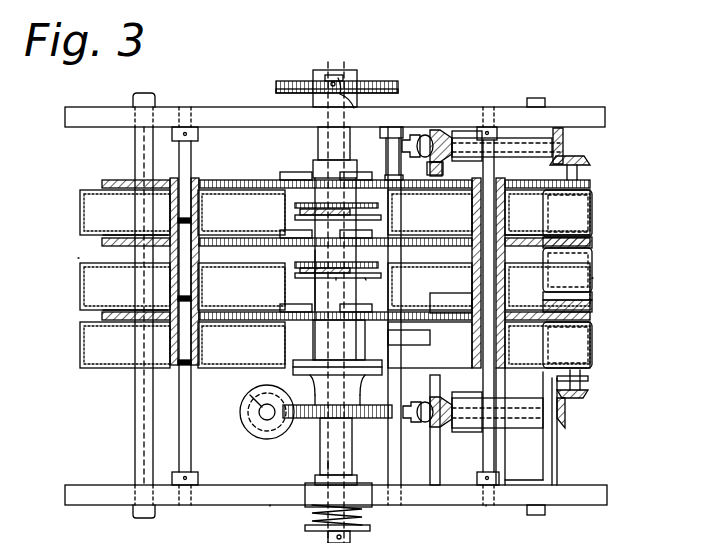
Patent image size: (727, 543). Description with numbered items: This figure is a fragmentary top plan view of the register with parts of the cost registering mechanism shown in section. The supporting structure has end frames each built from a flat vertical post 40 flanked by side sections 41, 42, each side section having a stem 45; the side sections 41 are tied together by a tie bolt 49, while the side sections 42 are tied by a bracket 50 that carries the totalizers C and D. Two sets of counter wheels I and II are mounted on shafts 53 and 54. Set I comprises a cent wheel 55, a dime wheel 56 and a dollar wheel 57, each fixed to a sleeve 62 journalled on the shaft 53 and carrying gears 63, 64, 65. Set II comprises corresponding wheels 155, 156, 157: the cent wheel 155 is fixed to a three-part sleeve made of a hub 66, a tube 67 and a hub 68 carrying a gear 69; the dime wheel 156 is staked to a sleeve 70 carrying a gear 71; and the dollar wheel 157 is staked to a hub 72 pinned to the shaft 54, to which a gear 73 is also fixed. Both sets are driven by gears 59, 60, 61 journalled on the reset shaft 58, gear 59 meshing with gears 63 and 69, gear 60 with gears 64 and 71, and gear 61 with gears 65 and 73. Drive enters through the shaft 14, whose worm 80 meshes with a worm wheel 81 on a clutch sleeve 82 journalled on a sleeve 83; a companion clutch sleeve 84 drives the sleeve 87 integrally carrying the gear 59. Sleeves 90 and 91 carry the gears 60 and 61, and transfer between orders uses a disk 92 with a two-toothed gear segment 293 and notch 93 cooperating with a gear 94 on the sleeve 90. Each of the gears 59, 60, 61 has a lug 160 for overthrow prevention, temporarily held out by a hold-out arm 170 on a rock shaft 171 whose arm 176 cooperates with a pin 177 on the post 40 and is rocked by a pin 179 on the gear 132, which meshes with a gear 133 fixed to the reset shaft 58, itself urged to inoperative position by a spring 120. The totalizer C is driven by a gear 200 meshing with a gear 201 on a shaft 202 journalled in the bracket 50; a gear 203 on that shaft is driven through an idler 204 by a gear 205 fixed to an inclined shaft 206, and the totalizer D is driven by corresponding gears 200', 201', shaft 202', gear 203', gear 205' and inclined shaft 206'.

The shaft 14 is at (260, 402).
The flat vertical post 40 is at (374, 500).
The side section 41 is at (270, 506).
The side section 42 is at (486, 507).
The stem 45 is at (588, 487).
The tie bolt 49 is at (134, 420).
The bracket 50 is at (558, 447).
The shaft 53 is at (183, 418).
The shaft 54 is at (499, 445).
The cent wheel 55 is at (79, 345).
The dime wheel 56 is at (79, 292).
The dollar wheel 57 is at (79, 214).
The reset shaft 58 is at (328, 466).
The gear 59 is at (241, 286).
The gear 60 is at (241, 212).
The gear 61 is at (264, 179).
The sleeve 62 is at (199, 212).
The gear 63 is at (108, 311).
The gear 64 is at (108, 236).
The gear 65 is at (110, 180).
The hub 66 is at (547, 212).
The tube 67 is at (507, 238).
The hub 68 is at (471, 305).
The gear 69 is at (547, 345).
The sleeve 70 is at (547, 282).
The gear 71 is at (430, 282).
The hub 72 is at (430, 345).
The gear 73 is at (430, 212).
The worm 80 is at (258, 430).
The worm wheel 81 is at (298, 418).
The clutch sleeve 82 is at (313, 387).
The sleeve 83 is at (320, 423).
The companion clutch sleeve 84 is at (241, 345).
The sleeve 87 is at (326, 292).
The sleeve 90 is at (325, 249).
The sleeve 91 is at (294, 176).
The disk 92 is at (382, 218).
The notch 93 is at (337, 278).
The gear 94 is at (379, 206).
The spring 120 is at (327, 536).
The gear 132 is at (282, 70).
The gear 133 is at (275, 91).
The cent wheel 155 is at (592, 202).
The dime wheel 156 is at (592, 272).
The dollar wheel 157 is at (592, 342).
The lug 160 is at (312, 339).
The hold-out member 170 is at (414, 339).
The rock shaft 171 is at (395, 462).
The arm 176 is at (398, 90).
The pin 177 is at (382, 128).
The pin 179 is at (336, 72).
The gear 200 is at (590, 154).
The gear 201 is at (575, 122).
The shaft 202 is at (506, 120).
The gear 203 is at (467, 122).
The idler 204 is at (432, 166).
The gear 205 is at (443, 119).
The inclined shaft 206 is at (418, 120).
The gear 200' is at (593, 385).
The gear 201' is at (584, 413).
The shaft 202' is at (497, 426).
The gear 203' is at (468, 434).
The gear 205' is at (430, 424).
The inclined shaft 206' is at (397, 422).
The two toothed gear segment 293 is at (366, 278).
The set of counter wheels I is at (70, 262).
The set of counter wheels II is at (602, 281).
The totalizer C is at (592, 244).
The totalizer D is at (592, 308).